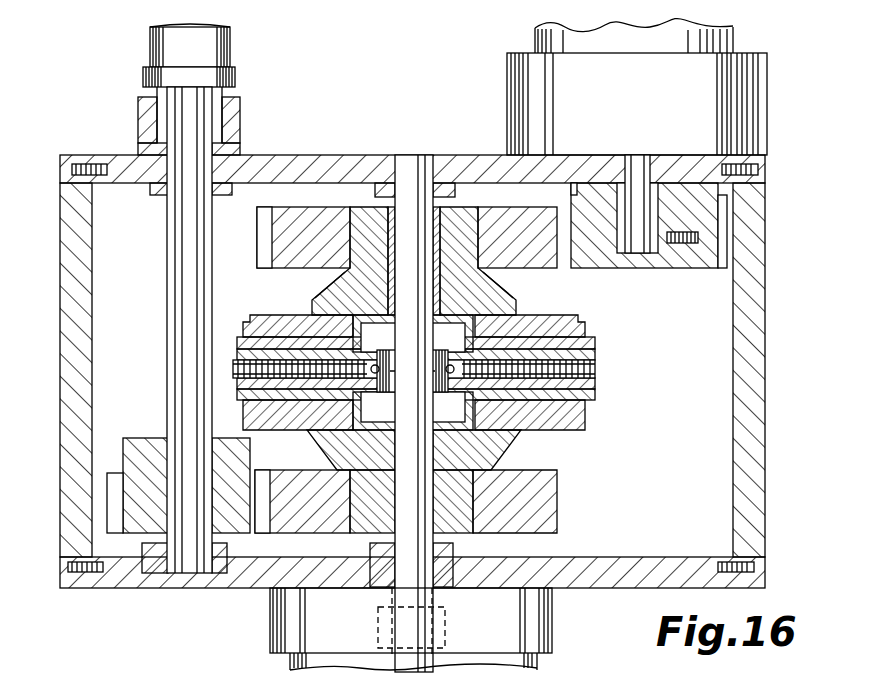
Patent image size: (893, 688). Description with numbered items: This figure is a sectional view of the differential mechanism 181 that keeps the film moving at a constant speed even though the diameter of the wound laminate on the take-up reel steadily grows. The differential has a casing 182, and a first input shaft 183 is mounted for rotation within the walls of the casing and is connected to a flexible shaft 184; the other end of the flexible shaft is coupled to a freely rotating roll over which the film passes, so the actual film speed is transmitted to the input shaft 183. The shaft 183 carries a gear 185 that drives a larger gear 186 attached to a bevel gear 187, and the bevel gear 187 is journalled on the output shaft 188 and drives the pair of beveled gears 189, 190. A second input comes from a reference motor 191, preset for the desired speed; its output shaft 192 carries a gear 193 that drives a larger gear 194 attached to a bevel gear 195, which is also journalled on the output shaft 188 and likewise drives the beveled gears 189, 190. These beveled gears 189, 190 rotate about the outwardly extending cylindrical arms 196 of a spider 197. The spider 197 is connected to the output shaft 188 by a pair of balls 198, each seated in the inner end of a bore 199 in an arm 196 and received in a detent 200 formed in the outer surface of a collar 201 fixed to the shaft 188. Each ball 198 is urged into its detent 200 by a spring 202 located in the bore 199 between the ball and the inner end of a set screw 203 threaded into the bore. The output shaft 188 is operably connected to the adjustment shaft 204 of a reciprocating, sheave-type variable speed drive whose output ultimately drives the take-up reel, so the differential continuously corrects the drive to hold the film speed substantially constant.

The differential mechanism 181 is at (779, 260).
The casing 182 is at (764, 330).
The first input shaft 183 is at (167, 225).
The flexible shaft 184 is at (148, 45).
The gear 185 is at (122, 504).
The larger gear 186 is at (300, 526).
The bevel gear 187 is at (482, 464).
The output shaft 188 is at (412, 160).
The beveled gear 189 is at (585, 430).
The beveled gear 190 is at (306, 430).
The reference motor 191 is at (512, 101).
The output shaft of motor 192 is at (637, 266).
The gear 193 is at (712, 268).
The larger gear 194 is at (552, 264).
The bevel gear 195 is at (335, 280).
The cylindrical arm 196 is at (236, 360).
The spider 197 is at (492, 438).
The ball 198 is at (448, 376).
The bore 199 is at (327, 330).
The detent 200 is at (438, 348).
The collar 201 is at (412, 371).
The spring 202 is at (444, 402).
The set screw 203 is at (233, 376).
The adjustment shaft 204 is at (290, 660).